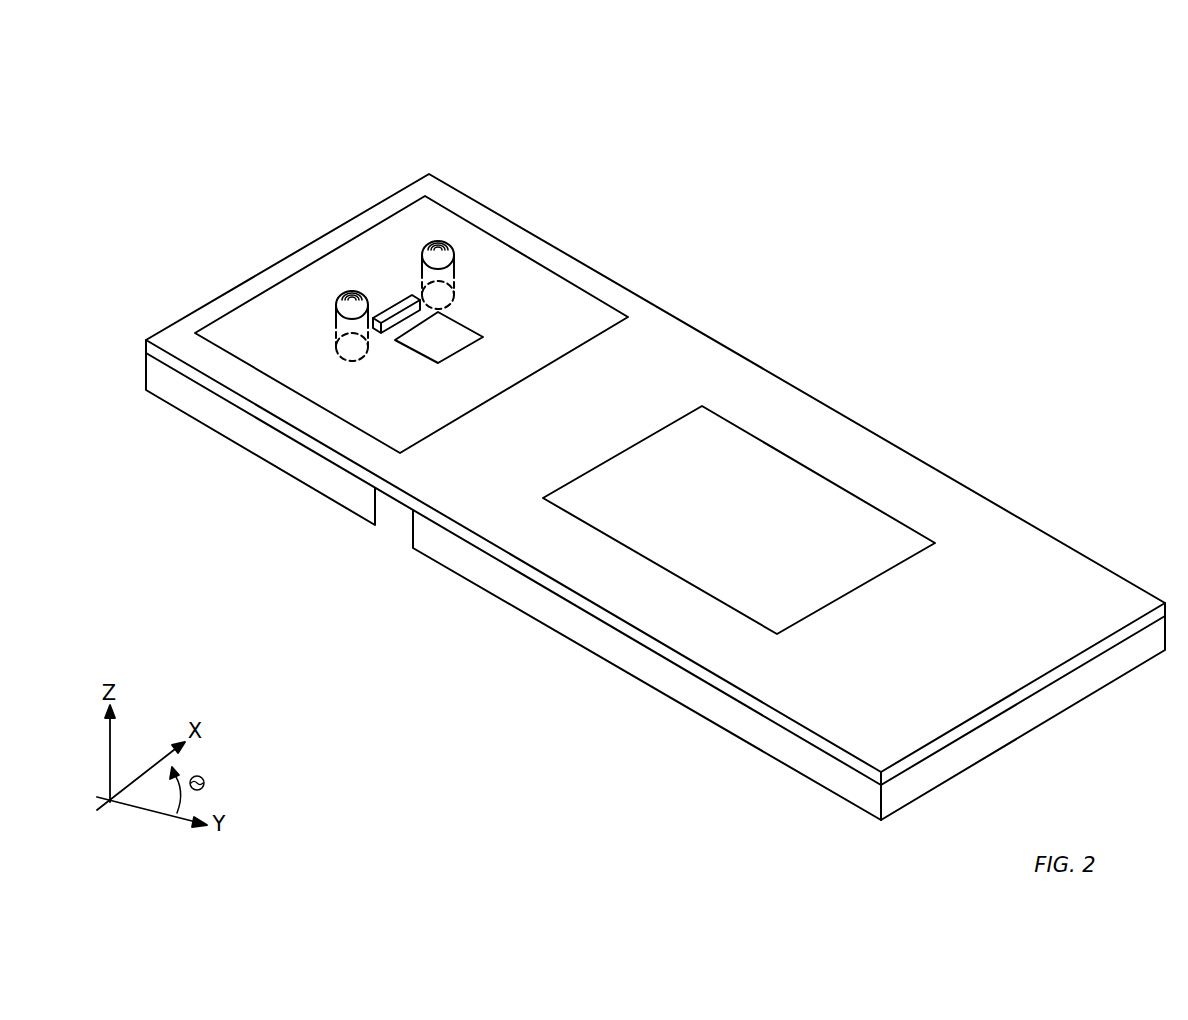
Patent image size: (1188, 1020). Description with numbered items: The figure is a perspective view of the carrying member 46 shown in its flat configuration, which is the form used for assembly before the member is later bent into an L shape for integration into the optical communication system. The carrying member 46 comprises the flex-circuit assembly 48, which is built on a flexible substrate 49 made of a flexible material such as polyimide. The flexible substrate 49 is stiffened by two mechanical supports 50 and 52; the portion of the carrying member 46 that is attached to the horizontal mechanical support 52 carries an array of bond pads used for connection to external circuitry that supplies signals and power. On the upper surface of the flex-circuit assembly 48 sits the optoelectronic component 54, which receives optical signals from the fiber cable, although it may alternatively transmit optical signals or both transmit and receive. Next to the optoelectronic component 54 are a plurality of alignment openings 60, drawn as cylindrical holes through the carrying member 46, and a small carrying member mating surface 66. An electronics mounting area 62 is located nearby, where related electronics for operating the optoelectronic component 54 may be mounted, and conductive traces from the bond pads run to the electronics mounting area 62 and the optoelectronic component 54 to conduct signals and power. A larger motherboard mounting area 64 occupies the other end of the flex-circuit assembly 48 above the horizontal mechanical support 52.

The carrying member 46 is at (325, 107).
The flex-circuit assembly 48 is at (669, 353).
The flexible substrate 49 is at (517, 523).
The mechanical support 50 is at (330, 483).
The horizontal mechanical support 52 is at (662, 673).
The optoelectronic component 54 is at (397, 303).
The alignment openings 60 is at (343, 297).
The electronics mounting area 62 is at (572, 322).
The motherboard mounting area 64 is at (813, 502).
The carrying member mating surface 66 is at (460, 339).